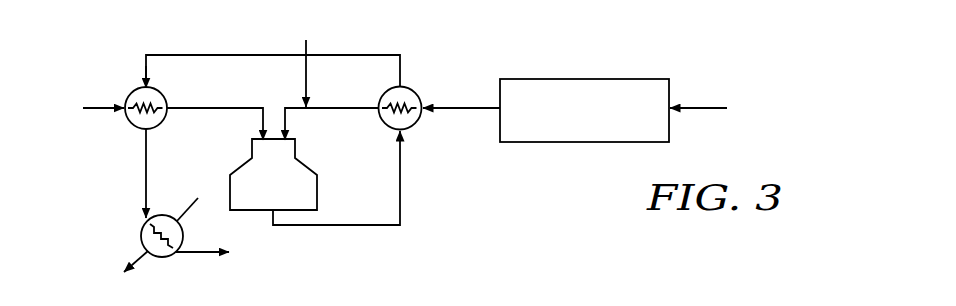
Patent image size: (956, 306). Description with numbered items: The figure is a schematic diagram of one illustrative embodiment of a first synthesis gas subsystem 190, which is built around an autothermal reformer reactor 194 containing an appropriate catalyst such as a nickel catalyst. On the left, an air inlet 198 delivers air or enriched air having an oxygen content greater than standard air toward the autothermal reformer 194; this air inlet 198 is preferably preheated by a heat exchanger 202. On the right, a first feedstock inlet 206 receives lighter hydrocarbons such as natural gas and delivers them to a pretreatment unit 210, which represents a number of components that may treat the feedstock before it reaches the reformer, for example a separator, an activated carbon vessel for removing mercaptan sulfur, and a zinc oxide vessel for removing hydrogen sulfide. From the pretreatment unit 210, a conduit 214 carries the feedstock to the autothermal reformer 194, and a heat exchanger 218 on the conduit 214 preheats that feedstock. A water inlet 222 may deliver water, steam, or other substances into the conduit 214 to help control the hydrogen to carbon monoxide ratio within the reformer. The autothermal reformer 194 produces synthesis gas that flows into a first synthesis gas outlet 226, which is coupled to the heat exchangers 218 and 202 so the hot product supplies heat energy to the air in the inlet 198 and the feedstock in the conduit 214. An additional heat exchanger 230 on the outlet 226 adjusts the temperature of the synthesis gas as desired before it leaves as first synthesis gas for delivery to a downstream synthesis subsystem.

The first synthesis gas subsystem 190 is at (536, 216).
The autothermal reformer reactor 194 is at (318, 192).
The air inlet 198 is at (98, 111).
The heat exchanger 202 is at (130, 91).
The first feedstock inlet 206 is at (700, 108).
The pretreatment unit 210 is at (595, 79).
The conduit 214 is at (458, 108).
The heat exchanger 218 is at (416, 124).
The water inlet 222 is at (306, 73).
The first synthesis gas outlet 226 is at (146, 183).
The heat exchanger 230 is at (140, 234).